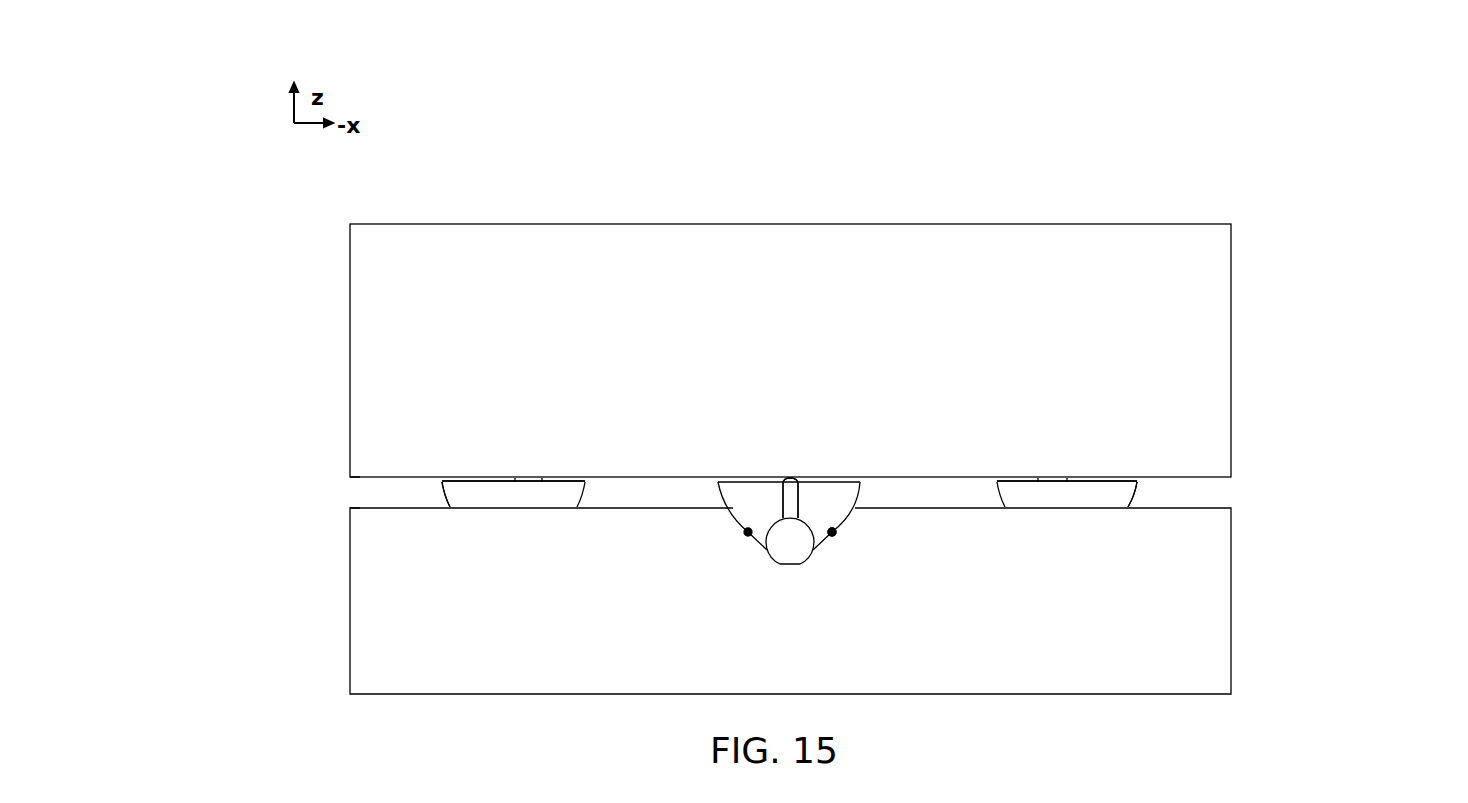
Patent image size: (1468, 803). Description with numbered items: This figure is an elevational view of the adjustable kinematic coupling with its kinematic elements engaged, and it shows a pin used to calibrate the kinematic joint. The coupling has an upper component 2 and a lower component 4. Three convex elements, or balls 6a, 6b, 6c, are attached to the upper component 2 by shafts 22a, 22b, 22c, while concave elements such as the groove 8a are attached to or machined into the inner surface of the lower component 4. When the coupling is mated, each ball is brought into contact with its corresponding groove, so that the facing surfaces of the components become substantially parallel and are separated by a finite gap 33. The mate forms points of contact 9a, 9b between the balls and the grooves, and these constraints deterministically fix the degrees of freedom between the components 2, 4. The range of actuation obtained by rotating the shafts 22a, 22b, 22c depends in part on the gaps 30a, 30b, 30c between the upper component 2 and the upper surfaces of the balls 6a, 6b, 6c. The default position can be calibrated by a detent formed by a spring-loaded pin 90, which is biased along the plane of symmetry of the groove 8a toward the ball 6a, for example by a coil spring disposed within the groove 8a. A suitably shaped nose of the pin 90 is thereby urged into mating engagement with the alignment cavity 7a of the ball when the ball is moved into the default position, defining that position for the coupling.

The upper component 2 is at (353, 335).
The lower component 4 is at (348, 673).
The convex element 6a is at (717, 490).
The convex element 6b is at (447, 498).
The convex element 6c is at (1135, 498).
The alignment cavity 7a is at (777, 478).
The concave element 8a is at (767, 550).
The point of contact 9a is at (832, 532).
The point of contact 9b is at (748, 532).
The shaft 22a is at (793, 480).
The shaft 22b is at (528, 478).
The shaft 22c is at (1048, 479).
The gap 30a is at (862, 482).
The gap 30b is at (440, 480).
The gap 30c is at (1143, 481).
The finite gap 33 is at (350, 495).
The pin 90 is at (832, 532).